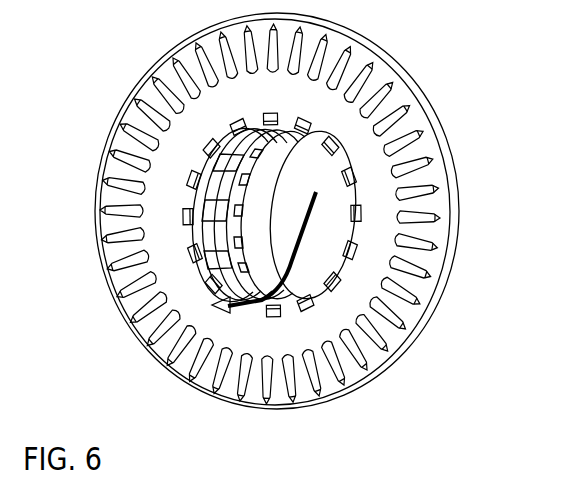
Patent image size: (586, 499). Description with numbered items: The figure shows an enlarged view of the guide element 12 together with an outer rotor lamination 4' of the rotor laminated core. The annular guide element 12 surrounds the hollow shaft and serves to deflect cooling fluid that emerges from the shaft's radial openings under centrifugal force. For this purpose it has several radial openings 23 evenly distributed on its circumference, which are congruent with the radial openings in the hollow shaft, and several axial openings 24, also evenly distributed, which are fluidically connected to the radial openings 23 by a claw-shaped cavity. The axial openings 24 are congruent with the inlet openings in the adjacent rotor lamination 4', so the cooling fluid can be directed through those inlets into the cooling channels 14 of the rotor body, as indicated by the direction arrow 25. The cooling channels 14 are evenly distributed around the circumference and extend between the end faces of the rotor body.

The outer rotor lamination 4' is at (277, 206).
The guide element 12 is at (265, 175).
The cooling channels 14 is at (352, 181).
The radial openings 23 is at (237, 208).
The axial openings 24 is at (222, 256).
The direction arrow 25 is at (303, 246).